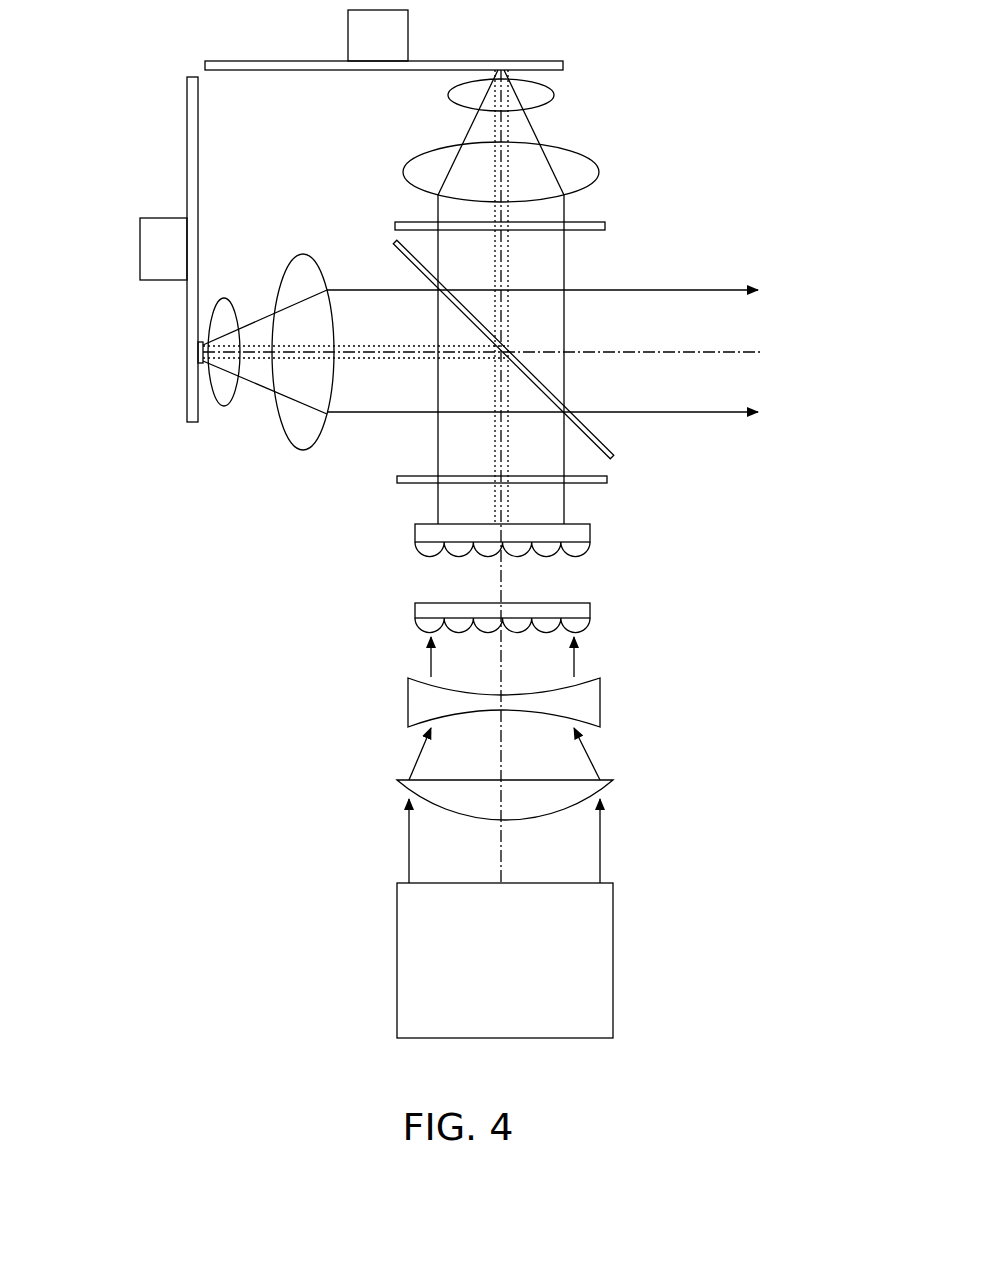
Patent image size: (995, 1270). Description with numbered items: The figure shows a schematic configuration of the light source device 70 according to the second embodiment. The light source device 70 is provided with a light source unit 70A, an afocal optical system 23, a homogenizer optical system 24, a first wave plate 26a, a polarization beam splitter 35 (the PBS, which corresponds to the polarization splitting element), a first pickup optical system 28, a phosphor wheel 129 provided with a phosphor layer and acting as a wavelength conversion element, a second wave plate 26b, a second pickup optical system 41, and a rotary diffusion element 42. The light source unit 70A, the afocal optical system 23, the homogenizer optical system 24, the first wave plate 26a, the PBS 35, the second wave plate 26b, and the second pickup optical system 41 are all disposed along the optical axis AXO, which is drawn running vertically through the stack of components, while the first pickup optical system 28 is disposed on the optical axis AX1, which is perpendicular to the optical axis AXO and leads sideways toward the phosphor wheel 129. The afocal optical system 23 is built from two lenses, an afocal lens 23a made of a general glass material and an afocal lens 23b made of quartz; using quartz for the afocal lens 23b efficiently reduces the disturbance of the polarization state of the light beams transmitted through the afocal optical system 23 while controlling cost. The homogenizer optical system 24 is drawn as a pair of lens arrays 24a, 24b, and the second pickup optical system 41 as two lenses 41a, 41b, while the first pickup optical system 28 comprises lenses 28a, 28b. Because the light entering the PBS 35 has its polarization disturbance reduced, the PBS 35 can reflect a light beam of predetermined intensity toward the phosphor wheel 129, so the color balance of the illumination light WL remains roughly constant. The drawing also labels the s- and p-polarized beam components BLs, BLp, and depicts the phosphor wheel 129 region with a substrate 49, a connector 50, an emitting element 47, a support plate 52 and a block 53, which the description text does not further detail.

The phosphor wheel 129 is at (155, 168).
The rotary diffusion element 42 is at (250, 42).
The support plate 52 is at (205, 65).
The holder block 53 is at (400, 36).
The substrate 49 is at (190, 112).
The connector 50 is at (140, 243).
The light emitting element 47 is at (198, 352).
The first pickup optical system 28 is at (213, 196).
The first collimating lens 28a is at (300, 262).
The second collimating lens 28b is at (230, 313).
The light source device 70 is at (613, 45).
The second pickup optical system 41 is at (660, 78).
The first condensing lens 41a is at (585, 178).
The second condensing lens 41b is at (540, 97).
The first wave plate 26a is at (607, 478).
The second wave plate 26b is at (605, 225).
The polarization beam splitter 35 is at (612, 427).
The homogenizer optical system 24 is at (692, 500).
The first lens array 24a is at (600, 612).
The second lens array 24b is at (600, 527).
The afocal optical system 23 is at (725, 682).
The afocal lens 23a is at (622, 780).
The afocal lens 23b is at (607, 692).
The light source unit 70A is at (613, 957).
The s-polarized blue light BLs is at (355, 287).
The p-polarized blue light BLp is at (564, 255).
The optical axis AX1 is at (730, 352).
The optical axis AXO is at (500, 590).
The illumination light WL is at (735, 413).